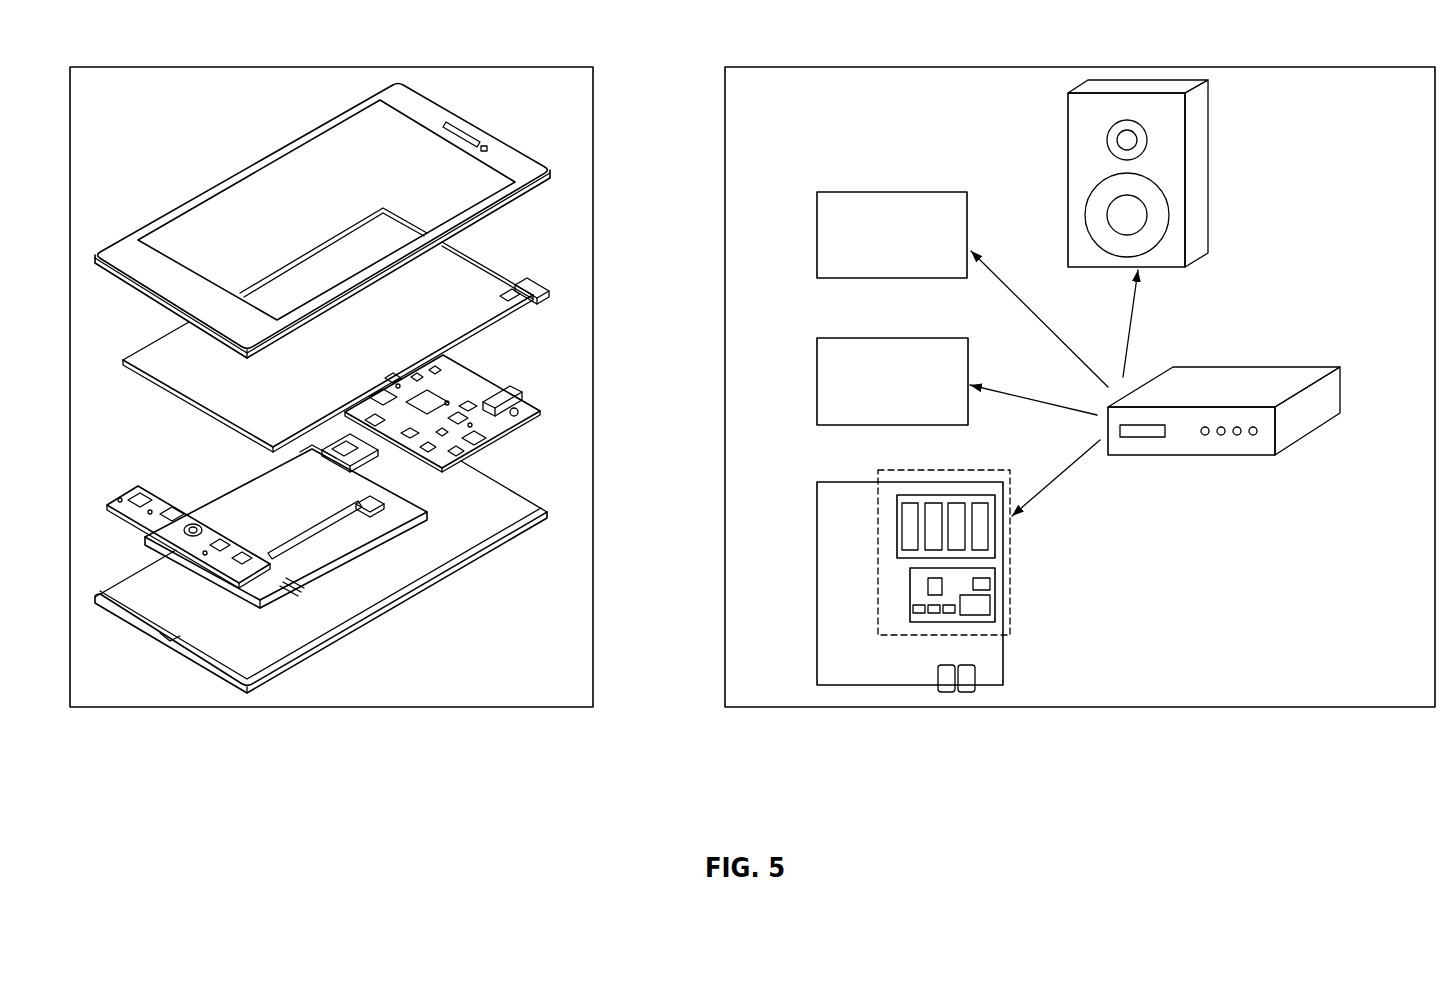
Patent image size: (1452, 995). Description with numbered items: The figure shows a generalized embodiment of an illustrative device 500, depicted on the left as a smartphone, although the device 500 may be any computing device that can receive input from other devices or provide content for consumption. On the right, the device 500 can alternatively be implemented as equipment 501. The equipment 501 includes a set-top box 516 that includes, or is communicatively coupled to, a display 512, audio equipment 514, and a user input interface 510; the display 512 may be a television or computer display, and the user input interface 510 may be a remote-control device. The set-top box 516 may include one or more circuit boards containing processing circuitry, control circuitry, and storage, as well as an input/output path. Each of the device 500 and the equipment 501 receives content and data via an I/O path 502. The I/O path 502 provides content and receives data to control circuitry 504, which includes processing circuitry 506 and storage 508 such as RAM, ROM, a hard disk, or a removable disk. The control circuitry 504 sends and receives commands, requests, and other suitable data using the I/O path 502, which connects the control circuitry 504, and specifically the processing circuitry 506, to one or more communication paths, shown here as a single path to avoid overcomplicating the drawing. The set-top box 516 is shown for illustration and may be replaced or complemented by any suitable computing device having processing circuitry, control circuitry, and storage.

The device 500 is at (167, 62).
The equipment 501 is at (1276, 66).
The I/O path 502 is at (180, 546).
The control circuitry 504 is at (877, 603).
The processing circuitry 506 is at (909, 577).
The storage 508 is at (896, 522).
The user input interface 510 is at (446, 276).
The display 512 is at (814, 348).
The audio equipment 514 is at (1063, 178).
The set-top box 516 is at (1217, 363).